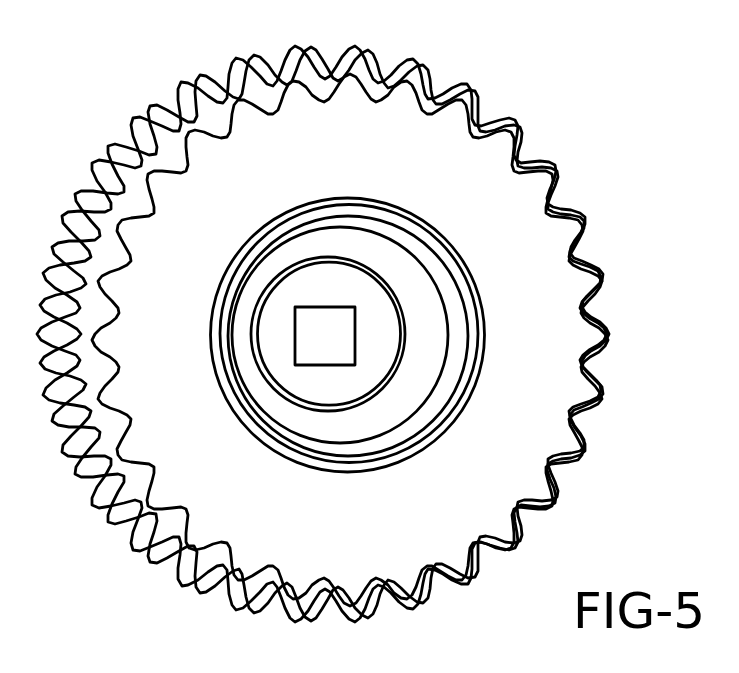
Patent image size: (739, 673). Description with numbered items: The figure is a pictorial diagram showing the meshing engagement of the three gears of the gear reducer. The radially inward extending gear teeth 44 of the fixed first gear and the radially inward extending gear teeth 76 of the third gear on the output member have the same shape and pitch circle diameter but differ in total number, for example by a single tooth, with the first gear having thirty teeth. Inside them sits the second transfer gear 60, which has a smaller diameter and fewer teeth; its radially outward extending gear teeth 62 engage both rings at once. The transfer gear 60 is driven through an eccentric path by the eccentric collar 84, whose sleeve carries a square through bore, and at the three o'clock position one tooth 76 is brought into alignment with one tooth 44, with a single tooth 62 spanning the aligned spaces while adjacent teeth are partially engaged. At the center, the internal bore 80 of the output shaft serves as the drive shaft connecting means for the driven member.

The gear teeth 44 is at (217, 73).
The gear teeth 76 is at (205, 97).
The second transfer gear 60 is at (498, 167).
The gear teeth 62 is at (455, 87).
The collar 84 is at (277, 264).
The internal bore 80 is at (320, 362).